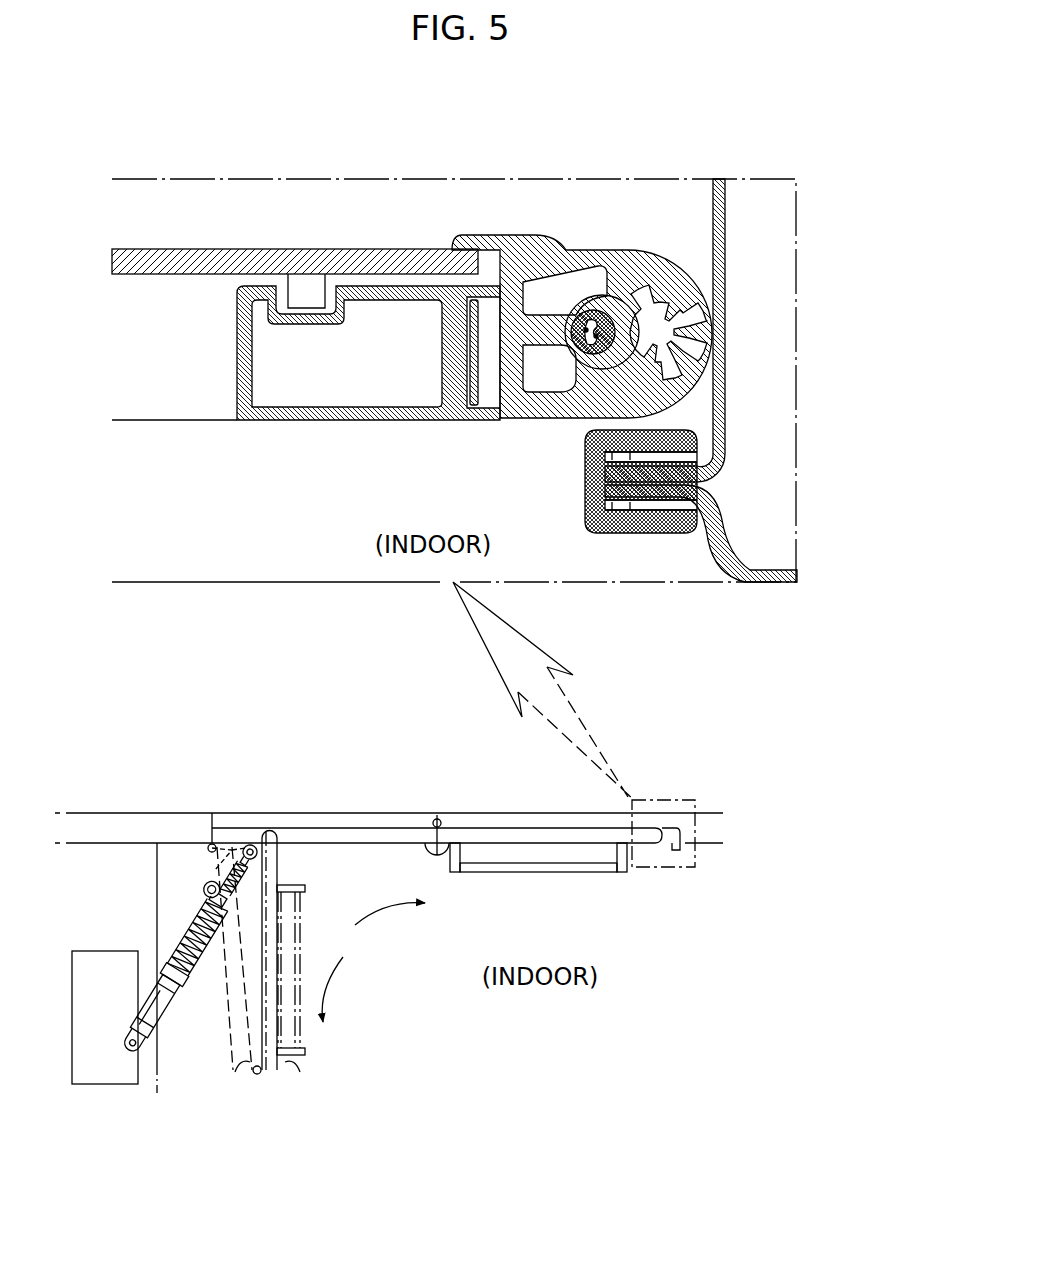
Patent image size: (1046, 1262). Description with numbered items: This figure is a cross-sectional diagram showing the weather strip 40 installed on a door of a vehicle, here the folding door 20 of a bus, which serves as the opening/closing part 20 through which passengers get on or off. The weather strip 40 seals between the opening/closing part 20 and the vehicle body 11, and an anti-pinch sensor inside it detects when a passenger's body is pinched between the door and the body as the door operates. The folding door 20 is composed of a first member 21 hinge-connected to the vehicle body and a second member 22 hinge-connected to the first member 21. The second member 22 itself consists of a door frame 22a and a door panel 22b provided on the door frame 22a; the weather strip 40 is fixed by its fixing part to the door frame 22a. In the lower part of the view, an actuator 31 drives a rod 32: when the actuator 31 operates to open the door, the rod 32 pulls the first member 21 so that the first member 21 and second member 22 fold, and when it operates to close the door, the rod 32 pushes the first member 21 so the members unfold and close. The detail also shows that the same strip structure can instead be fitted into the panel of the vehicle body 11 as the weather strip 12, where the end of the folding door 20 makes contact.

The window frame 11 is at (727, 257).
The weather strip 12 is at (640, 533).
The opening/closing part 20 is at (302, 802).
The first member 21 is at (327, 828).
The second member 22 is at (369, 633).
The door frame 22a is at (372, 292).
The door panel 22b is at (248, 262).
The actuator 31 is at (105, 1070).
The rod 32 is at (165, 1058).
The weather strip 40 is at (580, 240).